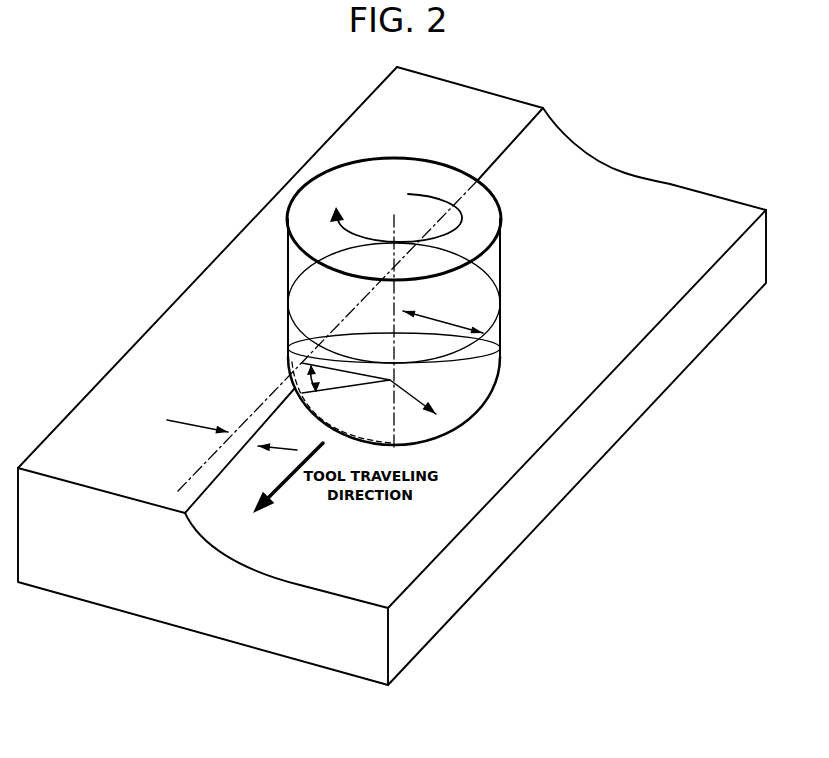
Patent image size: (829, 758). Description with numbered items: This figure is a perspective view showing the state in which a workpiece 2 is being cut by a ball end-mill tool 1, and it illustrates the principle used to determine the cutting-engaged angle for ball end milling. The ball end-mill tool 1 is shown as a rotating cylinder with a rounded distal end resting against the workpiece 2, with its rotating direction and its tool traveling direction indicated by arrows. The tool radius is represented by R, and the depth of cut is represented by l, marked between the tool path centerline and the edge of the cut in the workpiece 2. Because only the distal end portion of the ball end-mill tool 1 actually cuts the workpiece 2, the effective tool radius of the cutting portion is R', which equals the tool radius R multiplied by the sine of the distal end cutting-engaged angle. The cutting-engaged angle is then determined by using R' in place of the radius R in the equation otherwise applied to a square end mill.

The ball end-mill tool 1 is at (501, 258).
The workpiece 2 is at (176, 589).
The tool radius R is at (443, 331).
The tool radius of the cutting portion R' is at (449, 407).
The depth of cut l is at (239, 446).